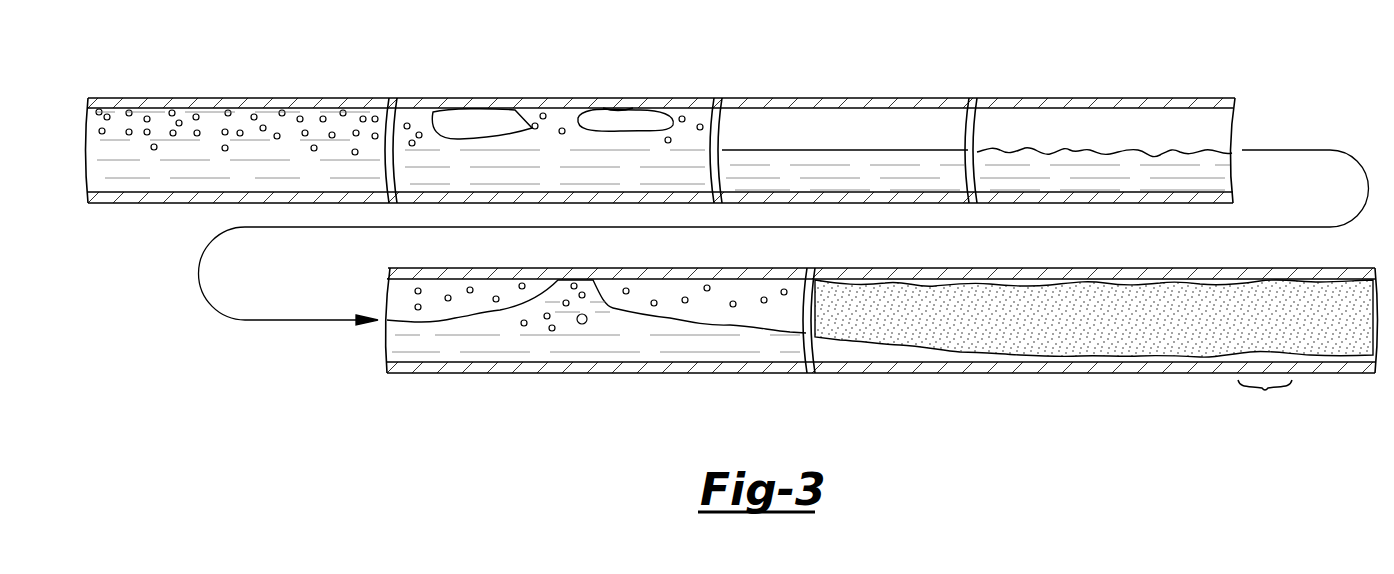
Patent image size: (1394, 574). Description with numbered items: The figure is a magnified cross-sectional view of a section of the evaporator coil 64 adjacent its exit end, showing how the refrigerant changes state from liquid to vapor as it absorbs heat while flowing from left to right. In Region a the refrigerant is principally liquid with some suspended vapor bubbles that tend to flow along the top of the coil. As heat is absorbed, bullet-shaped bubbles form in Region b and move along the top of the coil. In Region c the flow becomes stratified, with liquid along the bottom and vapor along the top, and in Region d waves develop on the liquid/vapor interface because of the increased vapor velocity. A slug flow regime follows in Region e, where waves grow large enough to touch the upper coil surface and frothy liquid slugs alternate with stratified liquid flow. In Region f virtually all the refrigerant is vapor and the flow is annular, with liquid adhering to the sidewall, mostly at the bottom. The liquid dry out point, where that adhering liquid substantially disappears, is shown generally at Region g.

The evaporator coil 64 is at (287, 98).
The Region a is at (237, 117).
The Region b is at (554, 120).
The Region c is at (845, 123).
The Region d is at (1104, 123).
The Region e is at (596, 294).
The Region f is at (1094, 349).
The Region g is at (1265, 403).